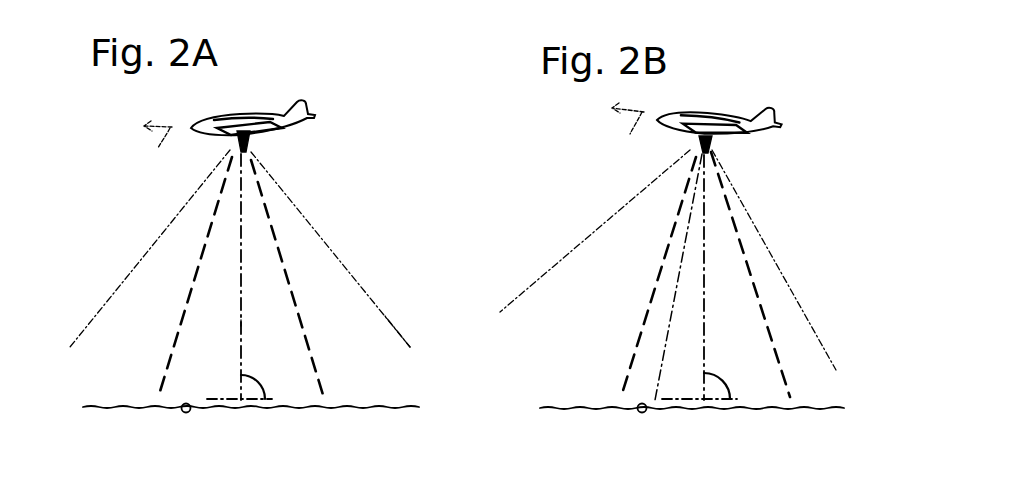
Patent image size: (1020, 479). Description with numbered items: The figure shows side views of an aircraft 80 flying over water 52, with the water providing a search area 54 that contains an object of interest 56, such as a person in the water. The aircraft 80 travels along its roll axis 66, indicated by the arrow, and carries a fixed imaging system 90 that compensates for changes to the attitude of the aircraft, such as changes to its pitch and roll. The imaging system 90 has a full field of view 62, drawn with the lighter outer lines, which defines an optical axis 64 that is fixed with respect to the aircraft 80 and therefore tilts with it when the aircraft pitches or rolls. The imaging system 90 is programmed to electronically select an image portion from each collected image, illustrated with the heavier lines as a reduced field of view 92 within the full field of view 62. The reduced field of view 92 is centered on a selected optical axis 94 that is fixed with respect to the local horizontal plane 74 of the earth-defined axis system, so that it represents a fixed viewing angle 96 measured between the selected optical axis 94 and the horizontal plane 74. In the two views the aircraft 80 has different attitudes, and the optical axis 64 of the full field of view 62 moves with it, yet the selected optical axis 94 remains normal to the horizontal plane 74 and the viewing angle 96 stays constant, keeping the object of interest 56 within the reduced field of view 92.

In FIG. 2A, the water 52 is at (122, 404).
In FIG. 2B, the water 52 is at (577, 404).
In FIG. 2A, the search area 54 is at (352, 390).
In FIG. 2A, the object of interest 56 is at (183, 412).
In FIG. 2B, the object of interest 56 is at (638, 412).
In FIG. 2A, the field of view 62 is at (171, 218).
In FIG. 2B, the field of view 62 is at (608, 218).
In FIG. 2A, the optical axis 64 is at (241, 282).
In FIG. 2B, the optical axis 64 is at (664, 360).
In FIG. 2A, the roll axis 66 is at (154, 145).
In FIG. 2B, the roll axis 66 is at (622, 127).
In FIG. 2A, the horizontal plane 74 is at (213, 399).
In FIG. 2A, the aircraft 80 is at (221, 101).
In FIG. 2B, the aircraft 80 is at (700, 96).
In FIG. 2A, the imaging system 90 is at (220, 147).
In FIG. 2B, the imaging system 90 is at (684, 141).
In FIG. 2A, the reduced field of view 92 is at (194, 272).
In FIG. 2B, the reduced field of view 92 is at (649, 294).
In FIG. 2A, the selected optical axis 94 is at (241, 322).
In FIG. 2B, the selected optical axis 94 is at (704, 322).
In FIG. 2A, the fixed viewing angle 96 is at (250, 379).
In FIG. 2B, the fixed viewing angle 96 is at (714, 380).